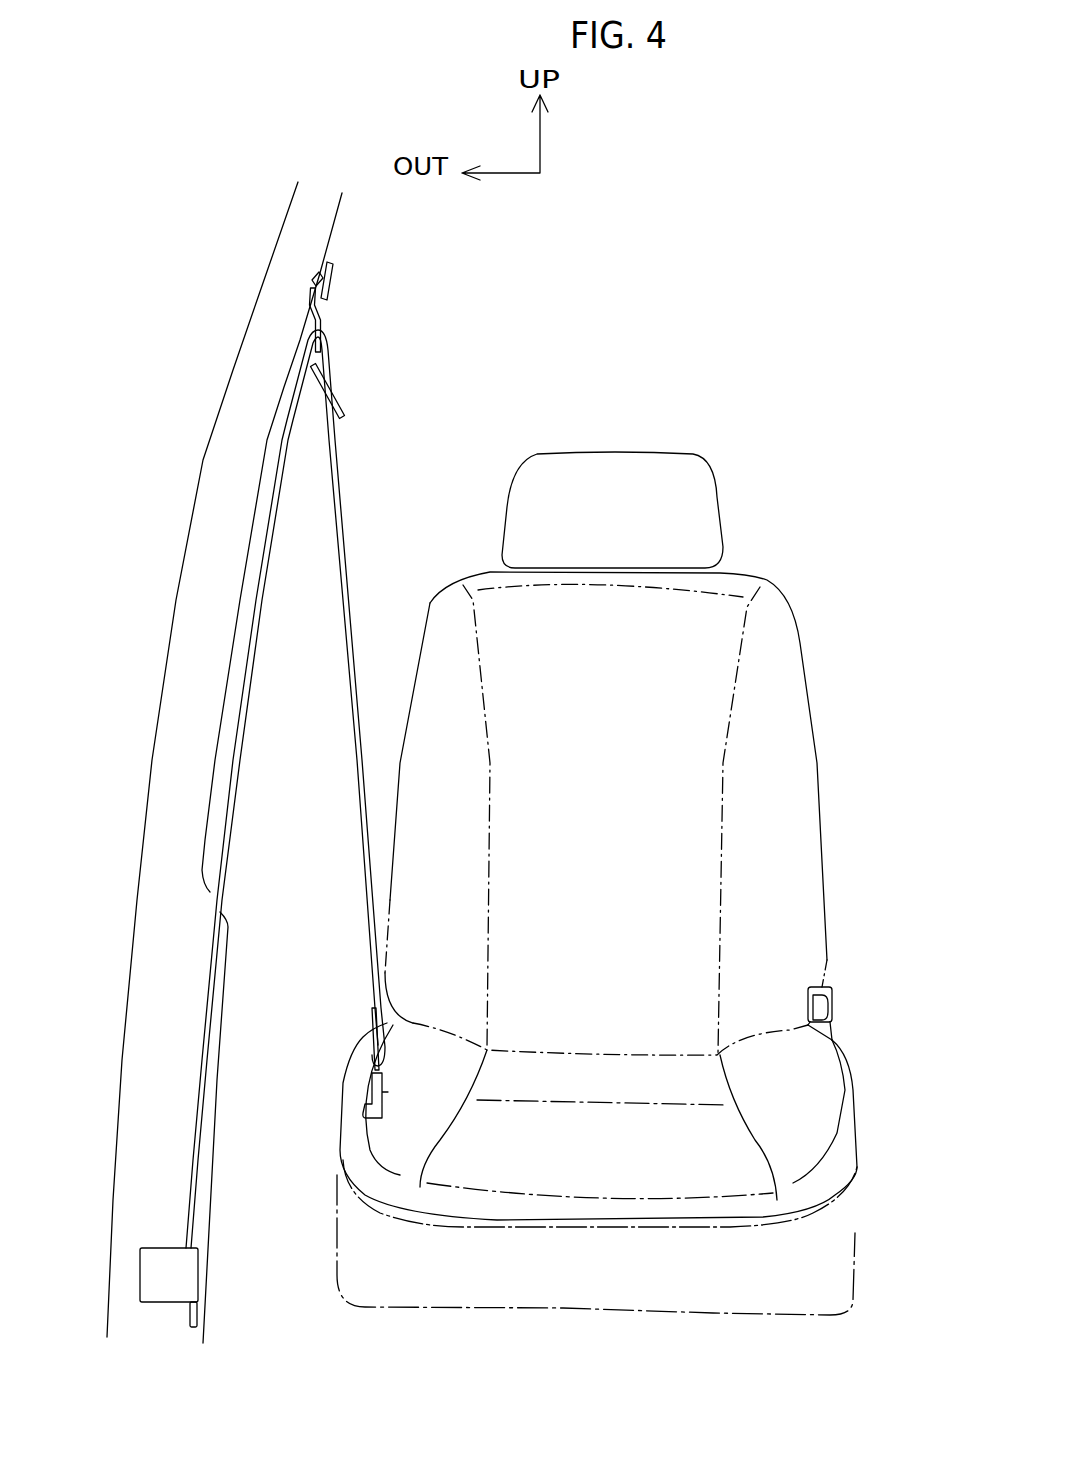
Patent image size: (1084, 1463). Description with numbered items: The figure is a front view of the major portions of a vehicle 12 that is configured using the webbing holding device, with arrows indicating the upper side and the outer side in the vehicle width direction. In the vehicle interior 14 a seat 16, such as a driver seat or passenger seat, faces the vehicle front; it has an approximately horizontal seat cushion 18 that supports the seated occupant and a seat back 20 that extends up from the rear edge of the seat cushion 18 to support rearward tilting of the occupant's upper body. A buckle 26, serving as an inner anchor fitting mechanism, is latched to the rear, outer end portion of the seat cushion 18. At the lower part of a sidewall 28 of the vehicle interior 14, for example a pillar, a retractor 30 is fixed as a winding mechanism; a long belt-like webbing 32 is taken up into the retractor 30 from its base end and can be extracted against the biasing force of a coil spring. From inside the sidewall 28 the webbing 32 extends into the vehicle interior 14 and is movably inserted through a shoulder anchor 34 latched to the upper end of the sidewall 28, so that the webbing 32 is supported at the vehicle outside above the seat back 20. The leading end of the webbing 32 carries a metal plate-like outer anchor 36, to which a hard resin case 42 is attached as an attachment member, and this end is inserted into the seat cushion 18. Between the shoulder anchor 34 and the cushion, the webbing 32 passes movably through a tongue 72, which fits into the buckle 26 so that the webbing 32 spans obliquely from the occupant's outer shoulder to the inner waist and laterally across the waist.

The vehicle 12 is at (246, 217).
The vehicle interior 14 is at (758, 403).
The seat 16 is at (726, 493).
The seat cushion 18 is at (860, 1097).
The seat back 20 is at (808, 688).
The buckle 26 is at (833, 1002).
The sidewall 28 is at (337, 212).
The retractor 30 is at (163, 1248).
The webbing 32 is at (343, 528).
The shoulder anchor 34 is at (322, 318).
The outer anchor 36 is at (367, 1066).
The case 42 is at (372, 1113).
The tongue 72 is at (343, 415).